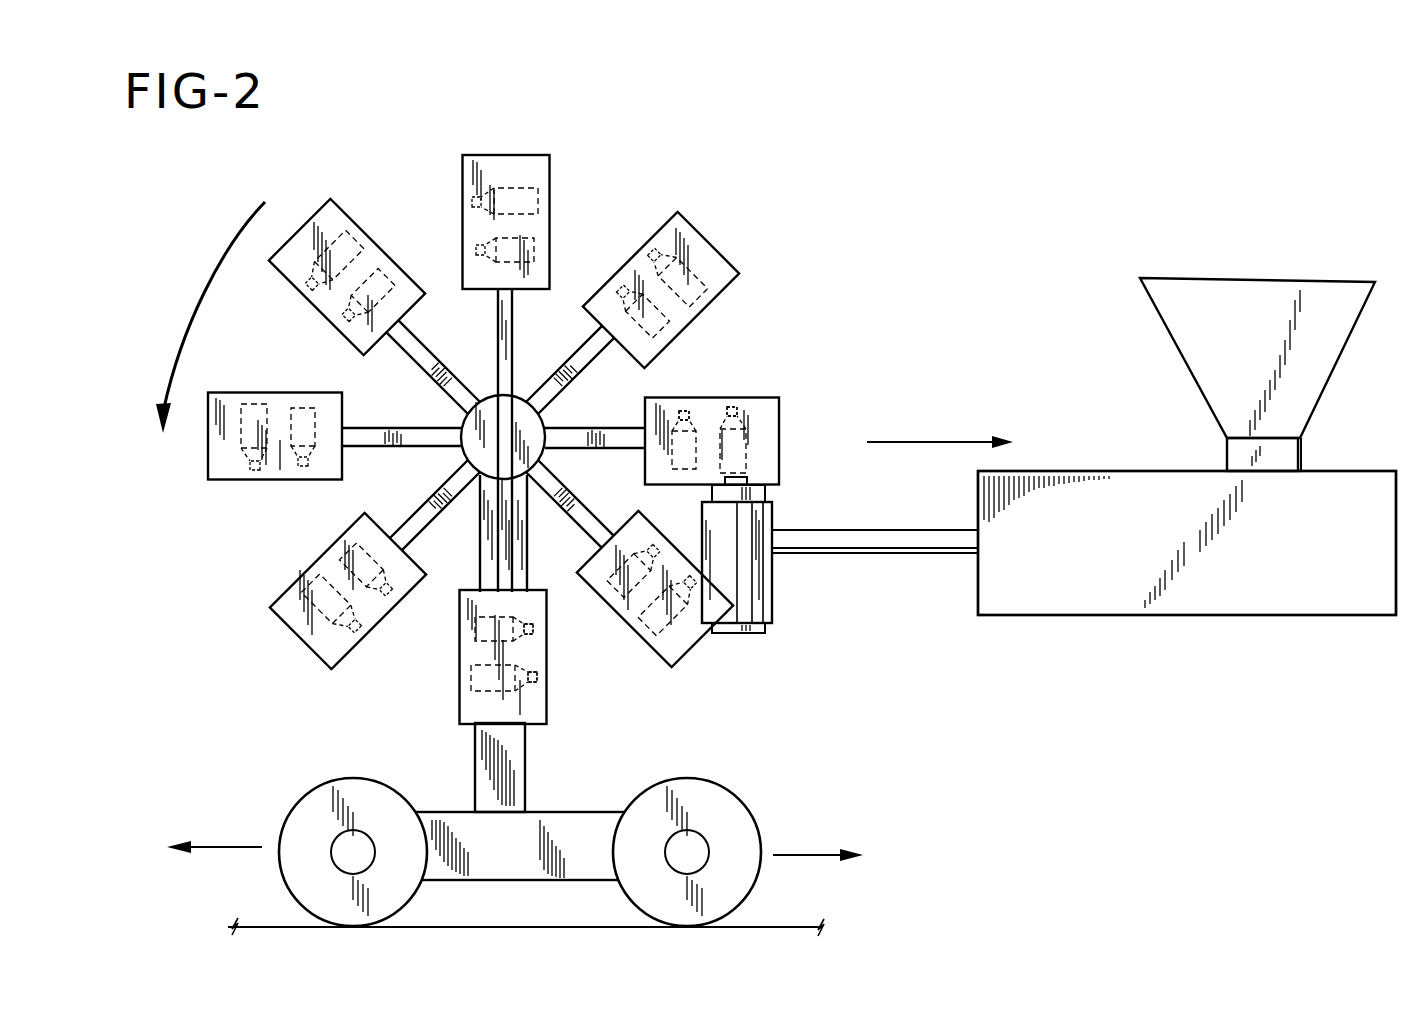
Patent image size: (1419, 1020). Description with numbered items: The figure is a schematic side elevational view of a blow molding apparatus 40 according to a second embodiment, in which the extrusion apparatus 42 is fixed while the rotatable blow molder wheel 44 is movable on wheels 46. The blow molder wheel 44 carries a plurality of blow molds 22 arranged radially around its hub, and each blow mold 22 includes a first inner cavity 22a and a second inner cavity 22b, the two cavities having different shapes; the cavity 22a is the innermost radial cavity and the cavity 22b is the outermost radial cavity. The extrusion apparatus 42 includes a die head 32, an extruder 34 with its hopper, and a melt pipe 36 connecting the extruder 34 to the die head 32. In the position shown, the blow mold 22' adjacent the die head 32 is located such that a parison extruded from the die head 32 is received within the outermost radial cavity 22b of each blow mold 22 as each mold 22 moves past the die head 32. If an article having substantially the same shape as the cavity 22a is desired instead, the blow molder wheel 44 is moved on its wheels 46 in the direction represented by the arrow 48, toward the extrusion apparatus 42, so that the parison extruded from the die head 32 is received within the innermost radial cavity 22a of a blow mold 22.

The blow mold 22 is at (481, 439).
The blow mold 22' is at (757, 436).
The first inner cavity 22a is at (686, 418).
The second inner cavity 22b is at (744, 424).
The die head 32 is at (766, 516).
The extruder 34 is at (1060, 606).
The melt pipe 36 is at (882, 546).
The blow molding apparatus 40 is at (822, 292).
The extrusion apparatus 42 is at (1197, 606).
The rotatable blow molder wheel 44 is at (632, 186).
The wheels 46 is at (313, 798).
The arrow 48 is at (904, 441).